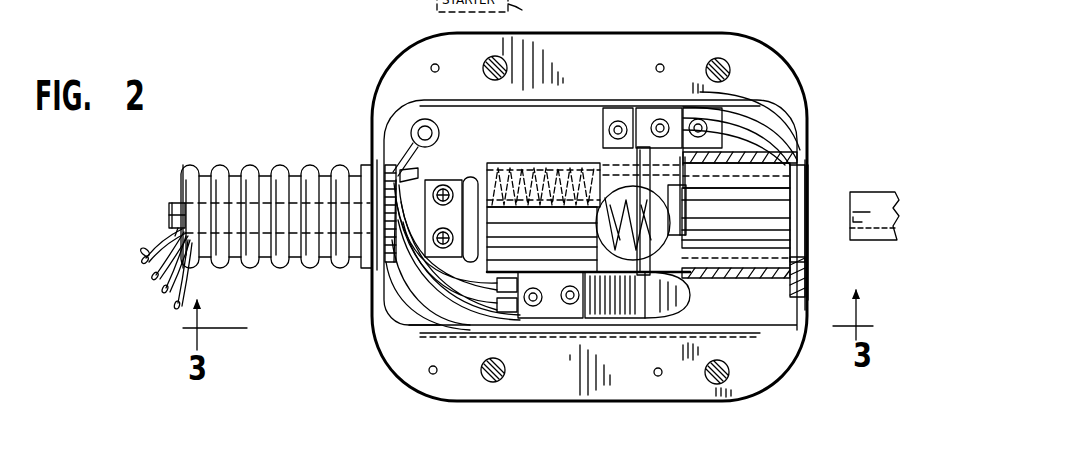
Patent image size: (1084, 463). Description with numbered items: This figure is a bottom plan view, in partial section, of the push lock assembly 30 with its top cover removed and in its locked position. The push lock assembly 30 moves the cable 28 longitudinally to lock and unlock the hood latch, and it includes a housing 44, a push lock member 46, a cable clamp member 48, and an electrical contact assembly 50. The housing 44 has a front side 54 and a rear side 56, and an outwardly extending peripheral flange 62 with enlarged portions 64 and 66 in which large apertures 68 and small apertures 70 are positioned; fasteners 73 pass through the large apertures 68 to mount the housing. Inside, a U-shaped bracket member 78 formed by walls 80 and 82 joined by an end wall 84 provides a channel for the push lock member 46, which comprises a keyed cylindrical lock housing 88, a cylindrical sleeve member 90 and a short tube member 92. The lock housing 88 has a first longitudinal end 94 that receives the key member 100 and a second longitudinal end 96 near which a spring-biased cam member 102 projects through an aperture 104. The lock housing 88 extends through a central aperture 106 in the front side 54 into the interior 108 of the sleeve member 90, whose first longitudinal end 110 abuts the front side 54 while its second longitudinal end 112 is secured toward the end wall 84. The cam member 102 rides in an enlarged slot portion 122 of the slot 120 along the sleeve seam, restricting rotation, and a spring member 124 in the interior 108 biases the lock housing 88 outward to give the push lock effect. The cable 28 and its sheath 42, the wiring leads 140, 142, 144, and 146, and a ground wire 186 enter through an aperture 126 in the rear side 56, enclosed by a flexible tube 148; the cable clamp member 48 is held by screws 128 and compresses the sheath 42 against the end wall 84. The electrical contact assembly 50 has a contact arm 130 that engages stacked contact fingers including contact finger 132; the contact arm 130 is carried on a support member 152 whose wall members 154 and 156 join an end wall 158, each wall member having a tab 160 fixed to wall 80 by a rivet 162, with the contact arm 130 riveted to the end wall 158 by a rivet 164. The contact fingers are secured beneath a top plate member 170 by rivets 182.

The cable 28 is at (168, 203).
The push lock assembly 30 is at (205, 72).
The sheath 42 is at (165, 228).
The housing 44 is at (757, 155).
The push lock member 46 is at (822, 182).
The cable clamp member 48 is at (400, 267).
The electrical contact assembly 50 is at (580, 325).
The front side 54 is at (805, 168).
The rear side 56 is at (383, 165).
The peripheral flange 62 is at (447, 398).
The enlarged portion 64 is at (775, 78).
The enlarged portion 66 is at (422, 382).
The large apertures 68 is at (432, 66).
The small apertures 70 is at (385, 62).
The fasteners 73 is at (488, 60).
The bracket member 78 is at (470, 125).
The wall 80 is at (513, 139).
The wall 82 is at (653, 318).
The end wall 84 is at (433, 160).
The lock housing 88 is at (790, 207).
The sleeve member 90 is at (797, 164).
The tube member 92 is at (787, 158).
The first longitudinal end 94 is at (810, 248).
The second longitudinal end 96 is at (627, 278).
The key member 100 is at (887, 213).
The cam member 102 is at (688, 196).
The aperture 104 is at (725, 217).
The central aperture 106 is at (817, 267).
The interior 108 is at (787, 240).
The first longitudinal end 110 is at (807, 272).
The second longitudinal end 112 is at (440, 282).
The slot 120 is at (503, 150).
The enlarged slot portion 122 is at (747, 228).
The spring member 124 is at (560, 178).
The aperture 126 is at (378, 172).
The screws 128 is at (448, 185).
The contact arm 130 is at (655, 108).
The contact finger 132 is at (655, 325).
The wiring lead 140 is at (143, 258).
The wiring lead 142 is at (152, 275).
The wiring lead 144 is at (160, 290).
The wiring lead 146 is at (178, 308).
The flexible tube 148 is at (192, 168).
The support member 152 is at (688, 107).
The wall member 154 is at (728, 93).
The wall member 156 is at (630, 123).
The end wall 158 is at (665, 100).
The tab 160 is at (617, 121).
The rivet 162 is at (610, 125).
The rivet 164 is at (752, 133).
The top plate member 170 is at (530, 310).
The rivets 182 is at (568, 303).
The ground wire 186 is at (144, 252).